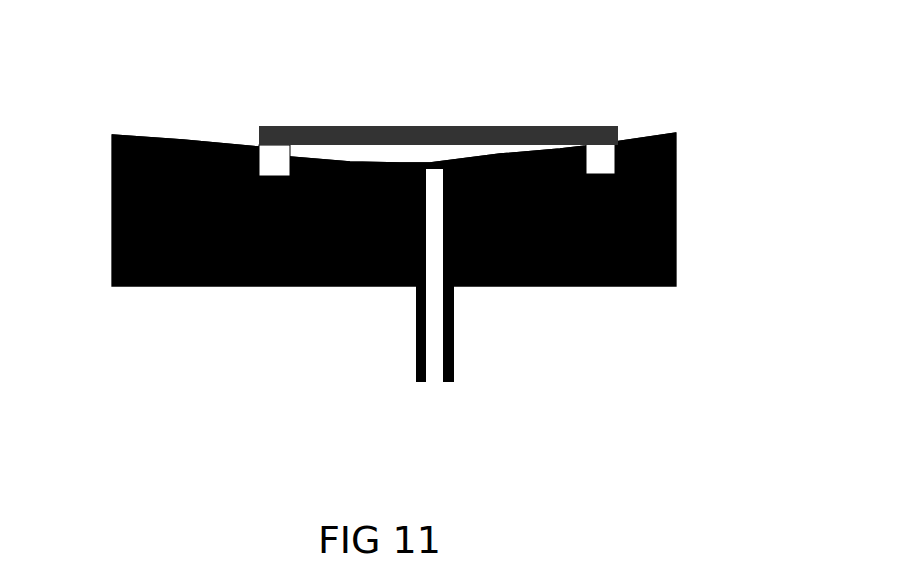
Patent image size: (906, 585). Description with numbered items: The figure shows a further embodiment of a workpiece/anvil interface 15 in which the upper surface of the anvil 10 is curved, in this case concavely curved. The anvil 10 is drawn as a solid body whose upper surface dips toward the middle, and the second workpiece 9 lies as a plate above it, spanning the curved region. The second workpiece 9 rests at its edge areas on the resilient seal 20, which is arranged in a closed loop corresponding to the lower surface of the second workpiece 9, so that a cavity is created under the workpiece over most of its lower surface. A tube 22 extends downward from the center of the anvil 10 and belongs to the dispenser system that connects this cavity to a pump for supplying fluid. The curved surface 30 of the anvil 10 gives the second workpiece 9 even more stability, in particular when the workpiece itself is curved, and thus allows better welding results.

The second workpiece 9 is at (408, 133).
The anvil 10 is at (213, 286).
The workpiece/anvil interface 15 is at (545, 91).
The seal 20 is at (267, 157).
The tube 22 is at (437, 328).
The curved surface 30 is at (177, 142).